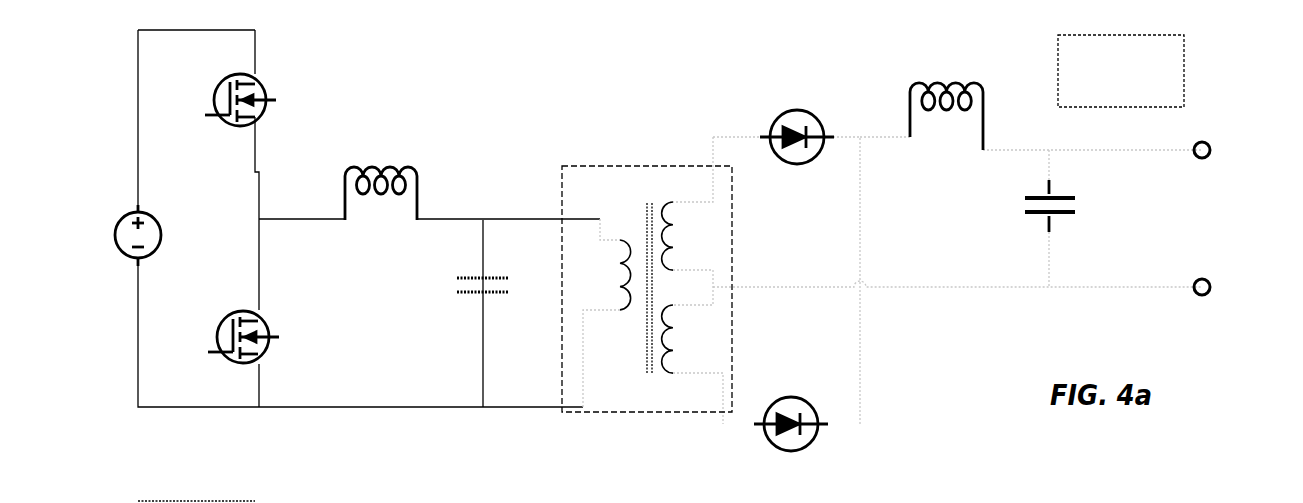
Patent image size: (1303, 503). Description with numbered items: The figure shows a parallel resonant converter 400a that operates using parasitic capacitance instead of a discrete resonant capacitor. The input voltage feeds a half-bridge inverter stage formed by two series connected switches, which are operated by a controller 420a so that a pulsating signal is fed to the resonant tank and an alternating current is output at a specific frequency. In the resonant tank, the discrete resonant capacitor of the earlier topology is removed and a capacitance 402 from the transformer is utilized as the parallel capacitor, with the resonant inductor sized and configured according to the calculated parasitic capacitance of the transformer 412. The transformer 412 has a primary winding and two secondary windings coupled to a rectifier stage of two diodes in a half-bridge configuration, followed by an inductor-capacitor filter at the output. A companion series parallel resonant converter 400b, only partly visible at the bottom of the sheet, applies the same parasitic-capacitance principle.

The parallel resonant converter 400a is at (404, 97).
The series parallel resonant converter 400b is at (277, 494).
The capacitance 402 is at (558, 298).
The transformer 412 is at (587, 165).
The controller 420a is at (1121, 71).